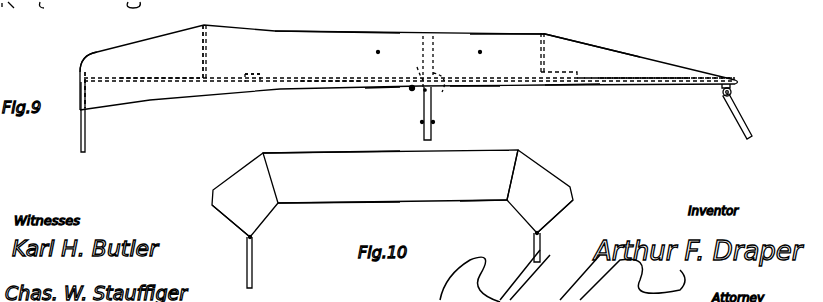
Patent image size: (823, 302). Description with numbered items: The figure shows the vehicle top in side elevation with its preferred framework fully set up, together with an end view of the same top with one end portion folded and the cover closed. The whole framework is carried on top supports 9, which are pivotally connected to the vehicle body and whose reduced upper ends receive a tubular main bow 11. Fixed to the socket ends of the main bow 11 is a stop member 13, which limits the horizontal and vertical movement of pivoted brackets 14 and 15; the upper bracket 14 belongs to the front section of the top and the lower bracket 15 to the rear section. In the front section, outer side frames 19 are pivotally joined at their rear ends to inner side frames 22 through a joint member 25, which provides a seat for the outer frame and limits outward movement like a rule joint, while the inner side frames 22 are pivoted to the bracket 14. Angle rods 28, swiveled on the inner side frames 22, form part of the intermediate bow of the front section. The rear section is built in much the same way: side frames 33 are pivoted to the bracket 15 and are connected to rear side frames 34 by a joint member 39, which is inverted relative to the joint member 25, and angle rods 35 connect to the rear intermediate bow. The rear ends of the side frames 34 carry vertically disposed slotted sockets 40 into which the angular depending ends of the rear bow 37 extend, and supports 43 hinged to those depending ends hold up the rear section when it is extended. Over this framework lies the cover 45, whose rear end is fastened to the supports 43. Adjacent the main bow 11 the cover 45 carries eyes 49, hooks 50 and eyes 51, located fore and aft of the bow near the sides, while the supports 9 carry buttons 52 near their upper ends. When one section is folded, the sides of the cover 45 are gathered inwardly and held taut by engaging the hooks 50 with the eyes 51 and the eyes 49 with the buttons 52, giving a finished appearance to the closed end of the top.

In FIG. 9, the top support 9 is at (424, 133).
In FIG. 10, the top support 9 is at (535, 253).
In FIG. 9, the main bow 11 is at (433, 37).
In FIG. 9, the stop member 13 is at (423, 92).
In FIG. 9, the pivoted bracket 14 is at (445, 91).
In FIG. 9, the pivoted bracket 15 is at (420, 76).
In FIG. 9, the outer side frame 19 is at (635, 83).
In FIG. 9, the inner side frame 22 is at (565, 86).
In FIG. 9, the joint member 25 is at (590, 68).
In FIG. 9, the angle rod 28 is at (556, 43).
In FIG. 9, the side frame 33 is at (333, 79).
In FIG. 9, the side frame 34 is at (182, 75).
In FIG. 9, the angle rod 35 is at (206, 62).
In FIG. 9, the rear bow 37 is at (98, 54).
In FIG. 9, the joint member 39 is at (258, 78).
In FIG. 9, the socket 40 is at (85, 78).
In FIG. 9, the support 43 is at (87, 142).
In FIG. 9, the cover 45 is at (322, 32).
In FIG. 10, the cover 45 is at (310, 155).
In FIG. 9, the eye 49 is at (487, 100).
In FIG. 10, the eye 49 is at (539, 235).
In FIG. 9, the hook 50 is at (481, 52).
In FIG. 10, the hook 50 is at (507, 200).
In FIG. 9, the eye 51 is at (475, 35).
In FIG. 10, the eye 51 is at (508, 201).
In FIG. 9, the button or hook 52 is at (450, 128).
In FIG. 10, the button or hook 52 is at (535, 233).